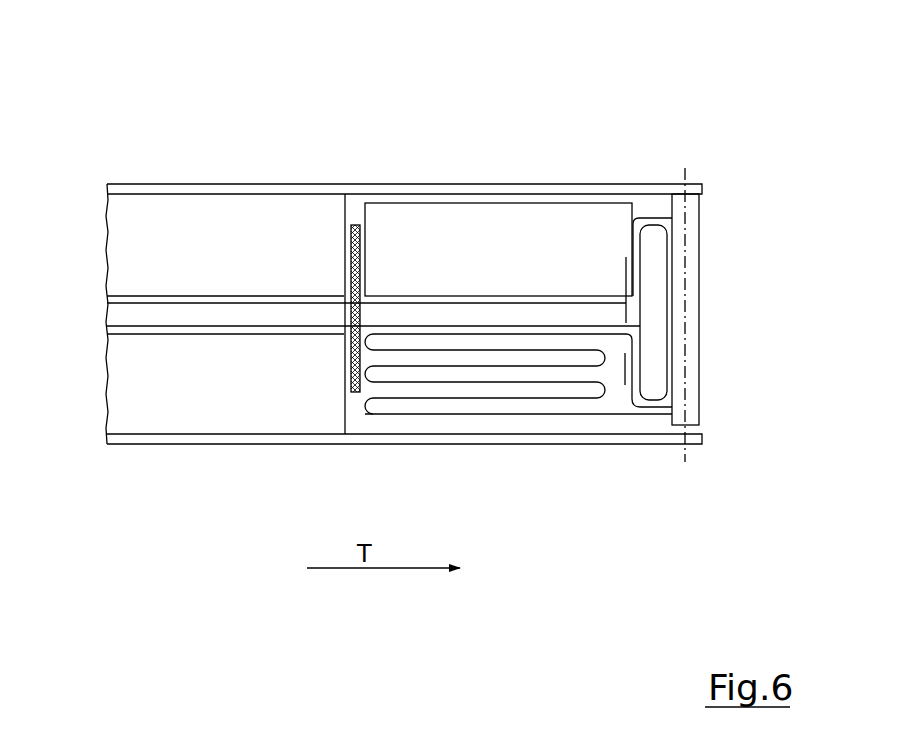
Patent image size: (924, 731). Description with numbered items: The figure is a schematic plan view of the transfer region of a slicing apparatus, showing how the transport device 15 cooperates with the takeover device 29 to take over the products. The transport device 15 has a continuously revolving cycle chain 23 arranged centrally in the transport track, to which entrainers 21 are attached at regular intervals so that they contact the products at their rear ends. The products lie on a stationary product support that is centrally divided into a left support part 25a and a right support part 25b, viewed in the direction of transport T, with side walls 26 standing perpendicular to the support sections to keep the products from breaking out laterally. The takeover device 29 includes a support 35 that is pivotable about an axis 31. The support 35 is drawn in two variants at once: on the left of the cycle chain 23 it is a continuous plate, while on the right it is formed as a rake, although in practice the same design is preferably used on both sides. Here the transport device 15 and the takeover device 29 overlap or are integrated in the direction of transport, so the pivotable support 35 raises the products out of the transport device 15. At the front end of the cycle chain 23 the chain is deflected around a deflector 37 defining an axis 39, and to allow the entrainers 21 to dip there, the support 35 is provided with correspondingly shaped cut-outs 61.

The transport device 15 is at (124, 158).
The entrainers 21 is at (355, 392).
The cycle chain 23 is at (130, 318).
The left support part 25a is at (299, 217).
The right support part 25b is at (205, 405).
The side walls 26 is at (467, 188).
The takeover device 29 is at (729, 148).
The axis 31 is at (685, 450).
The support 35 is at (553, 220).
The deflector 37 is at (620, 310).
The axis 39 is at (618, 378).
The cut-outs 61 is at (633, 235).